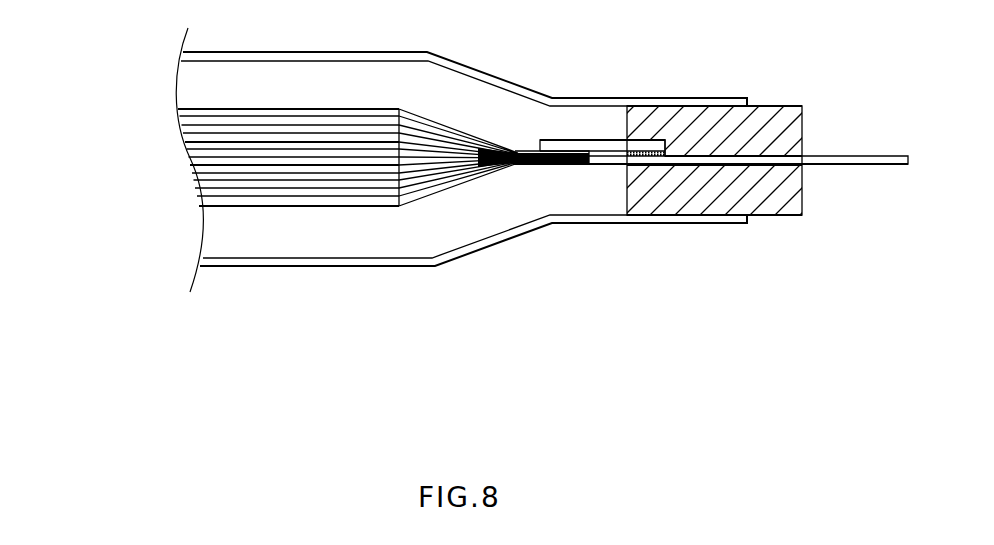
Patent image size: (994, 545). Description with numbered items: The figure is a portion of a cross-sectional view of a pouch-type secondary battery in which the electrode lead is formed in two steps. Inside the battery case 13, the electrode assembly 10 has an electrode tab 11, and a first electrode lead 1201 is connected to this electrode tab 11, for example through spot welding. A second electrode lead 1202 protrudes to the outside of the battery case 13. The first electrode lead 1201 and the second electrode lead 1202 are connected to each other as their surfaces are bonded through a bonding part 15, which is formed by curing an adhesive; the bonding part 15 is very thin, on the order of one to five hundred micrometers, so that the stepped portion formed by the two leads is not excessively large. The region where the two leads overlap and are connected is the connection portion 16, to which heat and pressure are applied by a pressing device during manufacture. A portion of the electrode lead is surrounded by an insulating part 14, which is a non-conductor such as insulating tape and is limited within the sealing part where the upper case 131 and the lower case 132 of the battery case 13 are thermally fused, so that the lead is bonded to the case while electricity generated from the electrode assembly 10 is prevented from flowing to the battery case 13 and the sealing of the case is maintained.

The electrode assembly 10 is at (318, 109).
The electrode tab 11 is at (555, 166).
The battery case 13 is at (100, 46).
The upper case 131 is at (204, 59).
The lower case 132 is at (222, 263).
The insulating part 14 is at (781, 127).
The bonding part 15 is at (636, 165).
The connection portion 16 is at (645, 151).
The first electrode lead 1201 is at (577, 140).
The second electrode lead 1202 is at (868, 156).